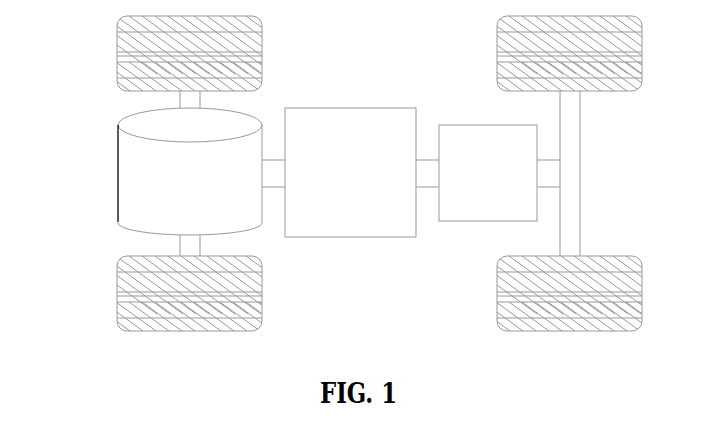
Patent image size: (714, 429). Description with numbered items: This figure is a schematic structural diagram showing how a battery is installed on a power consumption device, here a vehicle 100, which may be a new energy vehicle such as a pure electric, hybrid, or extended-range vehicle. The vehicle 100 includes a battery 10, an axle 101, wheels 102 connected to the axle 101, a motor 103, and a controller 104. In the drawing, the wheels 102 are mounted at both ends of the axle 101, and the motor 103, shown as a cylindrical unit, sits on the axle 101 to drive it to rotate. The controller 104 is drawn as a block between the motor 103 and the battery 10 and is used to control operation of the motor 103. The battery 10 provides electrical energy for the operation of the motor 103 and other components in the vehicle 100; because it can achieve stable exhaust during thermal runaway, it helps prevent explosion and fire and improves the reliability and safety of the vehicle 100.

The vehicle 100 is at (365, 73).
The battery 10 is at (472, 206).
The axle 101 is at (190, 248).
The wheels 102 is at (137, 287).
The motor 103 is at (181, 188).
The controller 104 is at (335, 225).